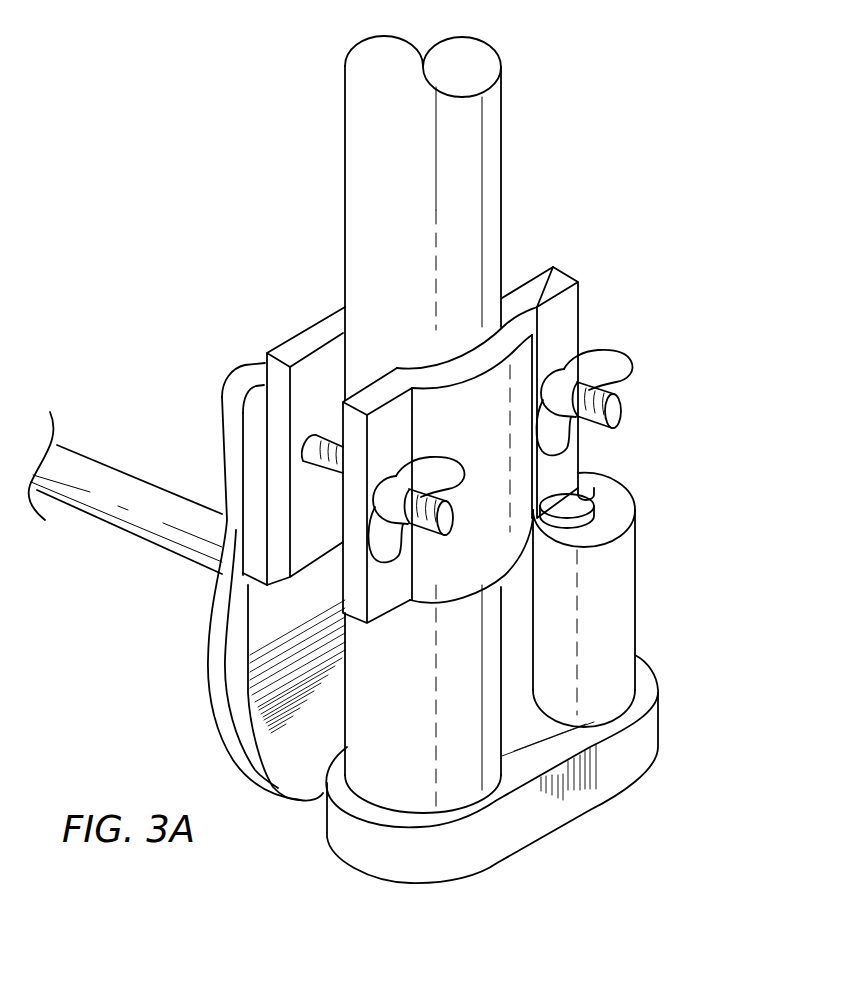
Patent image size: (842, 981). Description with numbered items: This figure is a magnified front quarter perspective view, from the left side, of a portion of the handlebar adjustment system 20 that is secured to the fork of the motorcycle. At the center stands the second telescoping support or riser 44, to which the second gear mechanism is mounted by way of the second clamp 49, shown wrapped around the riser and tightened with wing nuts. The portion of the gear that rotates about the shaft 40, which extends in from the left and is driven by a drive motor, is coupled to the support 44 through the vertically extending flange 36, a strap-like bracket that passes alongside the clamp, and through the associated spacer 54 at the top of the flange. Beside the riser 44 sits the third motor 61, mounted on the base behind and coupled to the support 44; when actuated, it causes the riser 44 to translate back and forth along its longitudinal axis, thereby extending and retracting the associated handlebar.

The handlebar adjustment system 20 is at (148, 301).
The vertically extending flange 36 is at (224, 424).
The shaft 40 is at (90, 466).
The second telescoping support 44 is at (572, 153).
The second clamp 49 is at (652, 342).
The spacer 54 is at (247, 411).
The third motor 61 is at (616, 593).